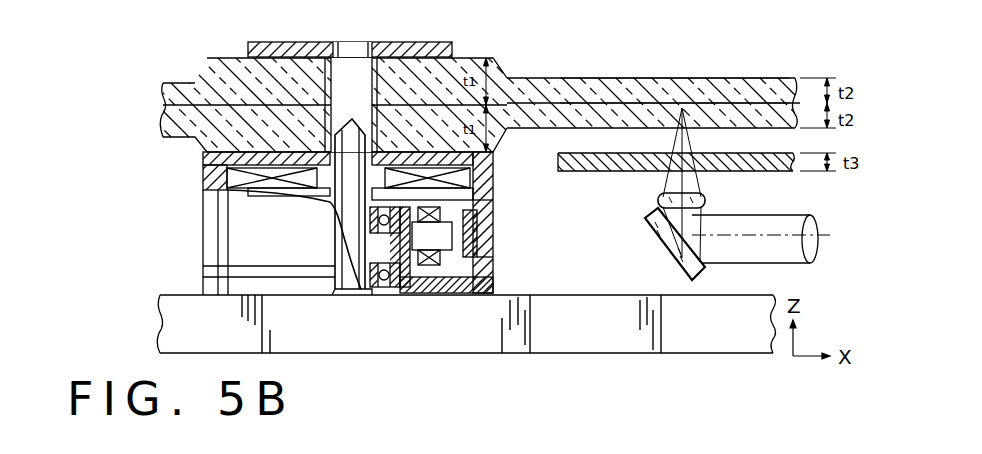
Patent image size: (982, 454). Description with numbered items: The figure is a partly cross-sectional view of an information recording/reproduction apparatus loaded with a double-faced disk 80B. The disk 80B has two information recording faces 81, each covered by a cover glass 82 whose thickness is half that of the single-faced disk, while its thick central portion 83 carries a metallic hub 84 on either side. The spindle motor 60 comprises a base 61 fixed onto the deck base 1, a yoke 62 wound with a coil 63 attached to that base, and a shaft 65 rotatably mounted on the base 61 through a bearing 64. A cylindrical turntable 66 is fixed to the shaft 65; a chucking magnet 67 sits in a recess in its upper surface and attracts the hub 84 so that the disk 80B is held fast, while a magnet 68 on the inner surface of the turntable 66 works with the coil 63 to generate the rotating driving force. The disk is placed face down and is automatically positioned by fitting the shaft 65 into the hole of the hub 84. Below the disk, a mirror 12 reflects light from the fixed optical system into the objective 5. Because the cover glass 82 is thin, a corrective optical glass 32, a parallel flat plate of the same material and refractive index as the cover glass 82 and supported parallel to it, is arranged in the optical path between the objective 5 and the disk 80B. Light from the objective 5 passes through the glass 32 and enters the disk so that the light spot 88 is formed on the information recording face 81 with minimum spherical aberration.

The deck base 1 is at (693, 340).
The objective 5 is at (709, 198).
The mirror 12 is at (664, 241).
The corrective optical glass 32 is at (770, 171).
The spindle motor 60 is at (200, 252).
The base 61 is at (500, 289).
The yoke 62 is at (454, 295).
The coil 63 is at (484, 228).
The bearing 64 is at (370, 294).
The shaft 65 is at (352, 120).
The turntable 66 is at (497, 167).
The chucking magnet 67 is at (494, 202).
The magnet 68 is at (452, 226).
The disk 80B is at (805, 73).
The information recording face 81 is at (722, 96).
The cover glass 82 is at (598, 92).
The hub body 83 is at (479, 58).
The hub 84 is at (303, 43).
The light spot 88 is at (680, 108).